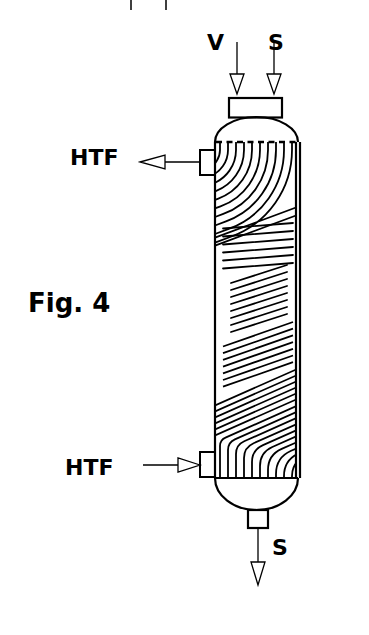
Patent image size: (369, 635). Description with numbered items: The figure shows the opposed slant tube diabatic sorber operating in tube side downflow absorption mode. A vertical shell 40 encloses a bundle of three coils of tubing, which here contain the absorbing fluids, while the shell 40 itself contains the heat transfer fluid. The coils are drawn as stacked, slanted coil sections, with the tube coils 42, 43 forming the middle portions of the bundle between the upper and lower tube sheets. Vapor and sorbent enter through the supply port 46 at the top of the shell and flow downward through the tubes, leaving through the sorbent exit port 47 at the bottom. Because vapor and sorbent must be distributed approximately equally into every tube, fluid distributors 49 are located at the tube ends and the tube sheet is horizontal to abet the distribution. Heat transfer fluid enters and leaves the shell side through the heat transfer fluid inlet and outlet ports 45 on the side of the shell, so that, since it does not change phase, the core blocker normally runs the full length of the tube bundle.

The shell 40 is at (299, 376).
The tube coil 42 is at (275, 260).
The tube coil 43 is at (280, 312).
The heat transfer fluid inlet and outlet ports 45 is at (205, 177).
The supply port 46 is at (229, 108).
The sorbent exit port 47 is at (246, 521).
The fluid distributors 49 is at (258, 141).